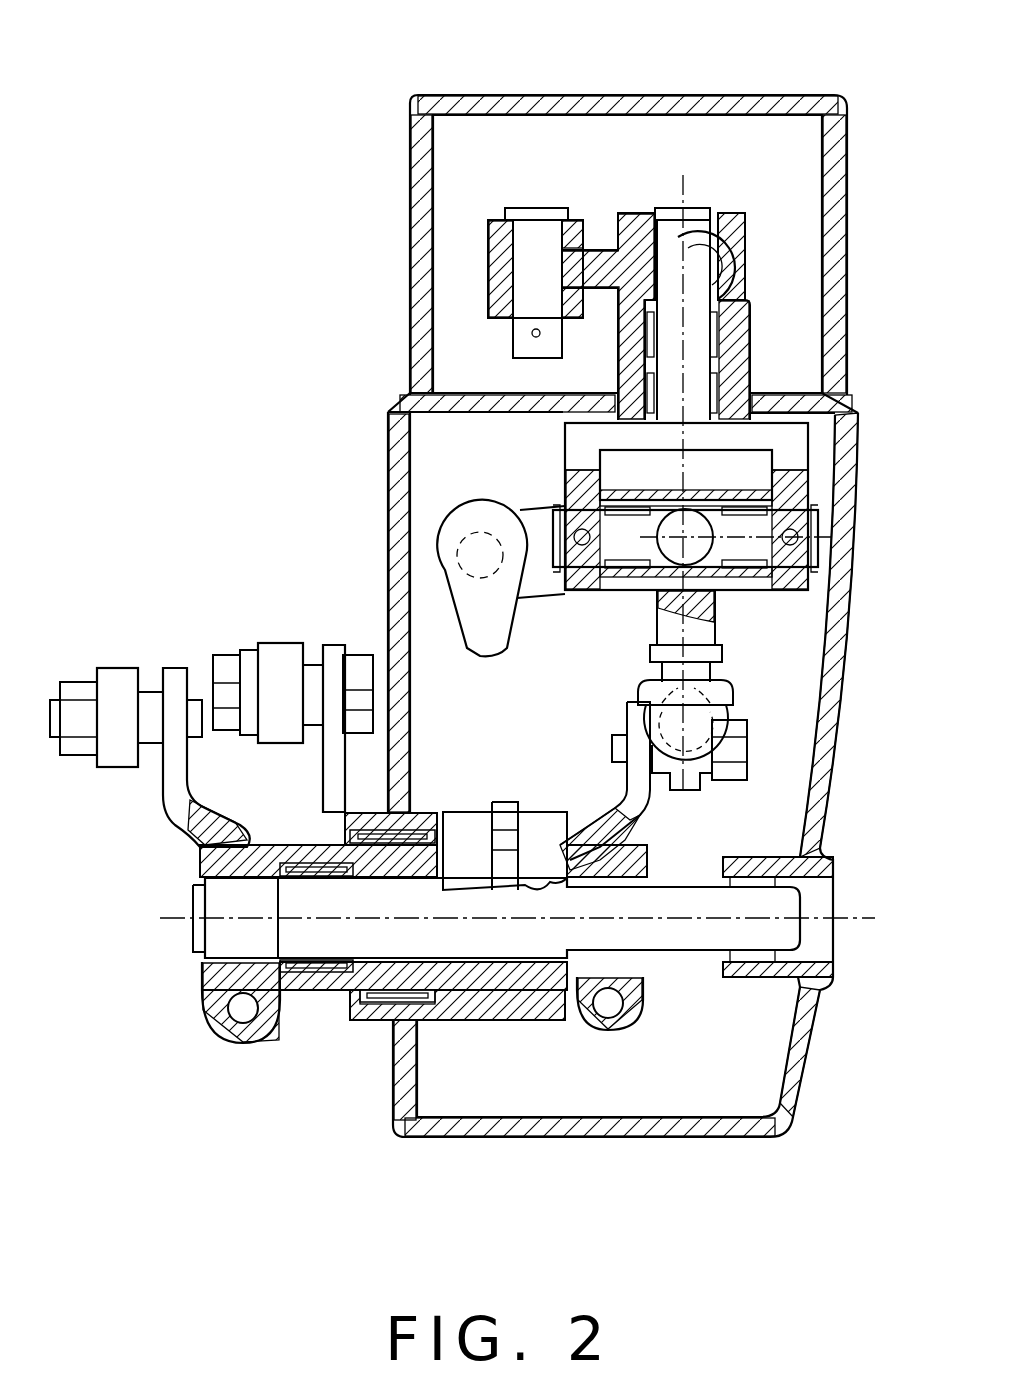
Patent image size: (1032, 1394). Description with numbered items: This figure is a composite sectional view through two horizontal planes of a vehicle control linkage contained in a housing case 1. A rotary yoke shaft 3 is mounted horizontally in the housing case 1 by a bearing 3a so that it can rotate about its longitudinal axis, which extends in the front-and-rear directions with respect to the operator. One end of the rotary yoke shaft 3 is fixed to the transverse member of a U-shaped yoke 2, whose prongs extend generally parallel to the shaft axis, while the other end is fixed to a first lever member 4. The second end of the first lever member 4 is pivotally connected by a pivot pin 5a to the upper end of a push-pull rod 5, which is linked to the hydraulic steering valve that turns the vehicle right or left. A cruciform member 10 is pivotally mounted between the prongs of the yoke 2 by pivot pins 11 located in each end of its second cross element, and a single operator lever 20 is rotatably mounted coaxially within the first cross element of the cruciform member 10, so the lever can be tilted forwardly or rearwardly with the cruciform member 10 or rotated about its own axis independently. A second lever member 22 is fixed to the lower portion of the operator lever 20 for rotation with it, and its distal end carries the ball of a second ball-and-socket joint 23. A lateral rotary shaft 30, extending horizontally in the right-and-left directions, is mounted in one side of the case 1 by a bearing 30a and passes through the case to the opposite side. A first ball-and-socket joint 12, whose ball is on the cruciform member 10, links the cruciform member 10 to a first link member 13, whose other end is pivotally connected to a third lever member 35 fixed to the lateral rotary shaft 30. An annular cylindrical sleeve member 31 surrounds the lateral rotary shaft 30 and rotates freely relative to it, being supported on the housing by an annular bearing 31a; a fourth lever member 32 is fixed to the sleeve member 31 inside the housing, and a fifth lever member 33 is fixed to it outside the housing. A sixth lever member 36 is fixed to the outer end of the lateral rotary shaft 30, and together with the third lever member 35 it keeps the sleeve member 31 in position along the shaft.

The housing case 1 is at (715, 102).
The U-shaped yoke 2 is at (785, 440).
The rotary yoke shaft 3 is at (690, 335).
The bearing 3a is at (720, 350).
The first lever member 4 is at (598, 268).
The push-pull rod 5 is at (492, 240).
The pivot pin 5a is at (527, 212).
The cruciform member 10 is at (780, 458).
The pivot pin 11 is at (785, 555).
The first ball-and-socket joint 12 is at (700, 712).
The first link member 13 is at (715, 748).
The operator lever 20 is at (715, 600).
The second lever member 22 is at (543, 580).
The second ball-and-socket joint 23 is at (465, 540).
The lateral rotary shaft 30 is at (700, 940).
The bearing 30a is at (790, 880).
The sleeve member 31 is at (470, 975).
The annular bearing 31a is at (287, 972).
The fourth lever member 32 is at (505, 802).
The fifth lever member 33 is at (333, 655).
The third lever member 35 is at (630, 812).
The sixth lever member 36 is at (178, 802).